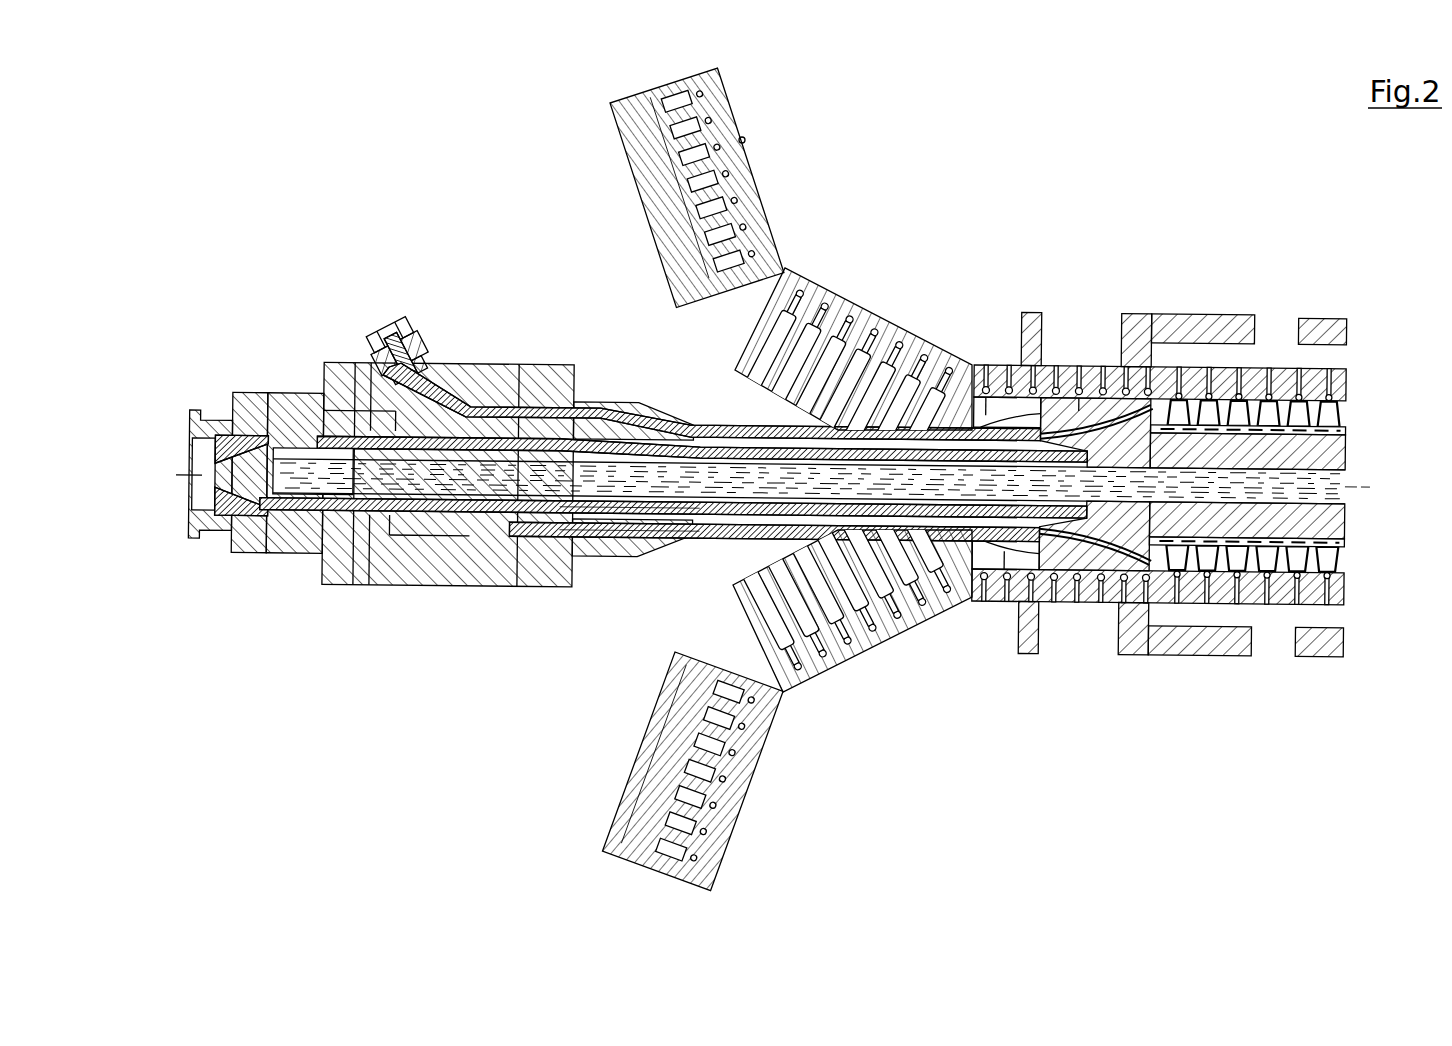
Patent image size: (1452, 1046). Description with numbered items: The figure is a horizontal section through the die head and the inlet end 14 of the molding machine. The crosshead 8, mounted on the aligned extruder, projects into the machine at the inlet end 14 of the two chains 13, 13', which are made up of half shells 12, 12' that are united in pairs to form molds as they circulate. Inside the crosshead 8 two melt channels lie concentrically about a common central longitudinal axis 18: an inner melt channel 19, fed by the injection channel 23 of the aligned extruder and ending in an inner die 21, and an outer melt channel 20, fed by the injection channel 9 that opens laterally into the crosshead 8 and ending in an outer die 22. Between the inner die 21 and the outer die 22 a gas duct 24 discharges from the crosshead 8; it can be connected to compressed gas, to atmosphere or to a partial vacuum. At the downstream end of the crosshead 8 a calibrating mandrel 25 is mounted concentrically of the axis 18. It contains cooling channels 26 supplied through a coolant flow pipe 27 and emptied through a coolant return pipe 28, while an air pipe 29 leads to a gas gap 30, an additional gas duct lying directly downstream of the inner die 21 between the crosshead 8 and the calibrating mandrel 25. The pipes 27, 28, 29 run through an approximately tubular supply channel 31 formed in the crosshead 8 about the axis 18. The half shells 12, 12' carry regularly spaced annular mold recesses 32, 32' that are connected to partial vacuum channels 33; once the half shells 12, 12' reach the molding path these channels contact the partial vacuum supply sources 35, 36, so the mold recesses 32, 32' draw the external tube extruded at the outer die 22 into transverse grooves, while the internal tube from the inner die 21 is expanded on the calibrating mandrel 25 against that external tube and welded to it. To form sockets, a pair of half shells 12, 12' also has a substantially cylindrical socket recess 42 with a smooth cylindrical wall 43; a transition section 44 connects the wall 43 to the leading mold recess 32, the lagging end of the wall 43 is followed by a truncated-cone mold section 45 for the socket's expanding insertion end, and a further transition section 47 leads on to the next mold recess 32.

The crosshead 8 is at (498, 350).
The injection channel 9 is at (405, 330).
The half shell 12 is at (724, 187).
The half shell 12' is at (746, 771).
The chain 13 is at (853, 330).
The chain 13' is at (852, 602).
The inlet end 14 is at (992, 341).
The central longitudinal axis 18 is at (178, 478).
The inner melt channel 19 is at (647, 443).
The outer melt channel 20 is at (608, 415).
The inner die 21 is at (1133, 430).
The outer die 22 is at (1040, 430).
The injection channel 23 is at (200, 457).
The gas duct 24 is at (686, 438).
The calibrating mandrel 25 is at (1340, 540).
The cooling channels 26 is at (1340, 428).
The coolant flow pipe 27 is at (614, 484).
The coolant return pipe 28 is at (651, 507).
The air pipe 29 is at (694, 530).
The gas gap 30 is at (1150, 534).
The supply channel 31 is at (386, 518).
The annular mold recesses 32 is at (640, 187).
The annular mold recesses 32' is at (628, 754).
The partial vacuum channels 33 is at (742, 138).
The partial vacuum supply source 35 is at (1093, 638).
The partial vacuum supply source 36 is at (1293, 634).
The socket recess 42 is at (1032, 553).
The cylindrical wall 43 is at (1078, 407).
The transition section 44 is at (1173, 370).
The mold section 45 is at (1005, 537).
The transition section 47 is at (985, 412).